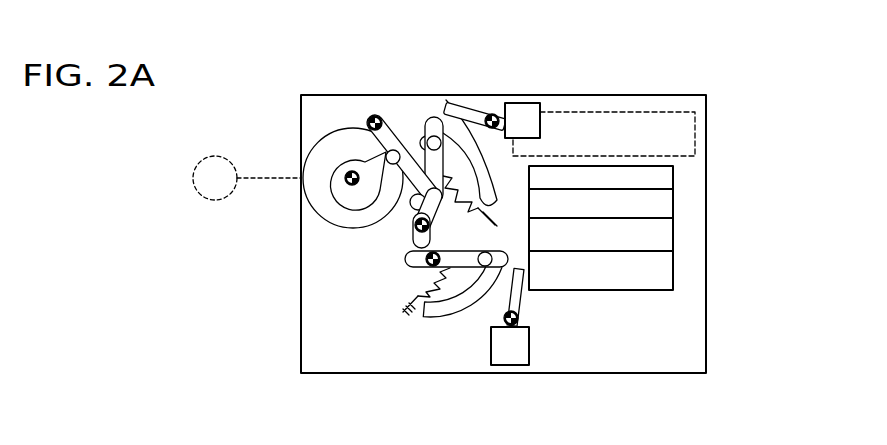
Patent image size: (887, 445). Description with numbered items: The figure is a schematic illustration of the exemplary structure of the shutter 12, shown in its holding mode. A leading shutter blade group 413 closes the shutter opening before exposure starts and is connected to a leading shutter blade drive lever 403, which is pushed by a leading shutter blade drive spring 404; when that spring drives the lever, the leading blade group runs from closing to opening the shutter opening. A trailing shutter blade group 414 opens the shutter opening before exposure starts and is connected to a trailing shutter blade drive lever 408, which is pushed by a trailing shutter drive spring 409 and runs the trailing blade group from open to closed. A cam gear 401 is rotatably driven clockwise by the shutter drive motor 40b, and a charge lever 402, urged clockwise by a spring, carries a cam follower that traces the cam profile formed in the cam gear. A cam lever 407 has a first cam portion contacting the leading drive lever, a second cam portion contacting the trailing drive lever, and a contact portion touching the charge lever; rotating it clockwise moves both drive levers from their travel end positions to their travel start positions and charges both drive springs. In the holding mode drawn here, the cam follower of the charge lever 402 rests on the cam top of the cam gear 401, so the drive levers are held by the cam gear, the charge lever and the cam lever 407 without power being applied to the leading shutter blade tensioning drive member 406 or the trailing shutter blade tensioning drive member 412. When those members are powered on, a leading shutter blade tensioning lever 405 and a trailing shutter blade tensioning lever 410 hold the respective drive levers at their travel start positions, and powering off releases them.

The shutter 12 is at (706, 121).
The shutter drive motor 40b is at (212, 156).
The cam gear 401 is at (327, 151).
The charge lever 402 is at (372, 121).
The leading shutter blade drive lever 403 is at (405, 258).
The leading shutter blade drive spring 404 is at (416, 287).
The leading shutter blade tensioning lever 405 is at (505, 303).
The leading shutter blade tensioning drive member 406 is at (513, 355).
The cam lever 407 is at (413, 235).
The trailing shutter blade drive lever 408 is at (425, 130).
The trailing shutter drive spring 409 is at (438, 117).
The trailing shutter blade tensioning lever 410 is at (477, 113).
The trailing shutter blade tensioning drive member 412 is at (528, 108).
The leading shutter blade group 413 is at (665, 228).
The trailing shutter blade group 414 is at (653, 112).